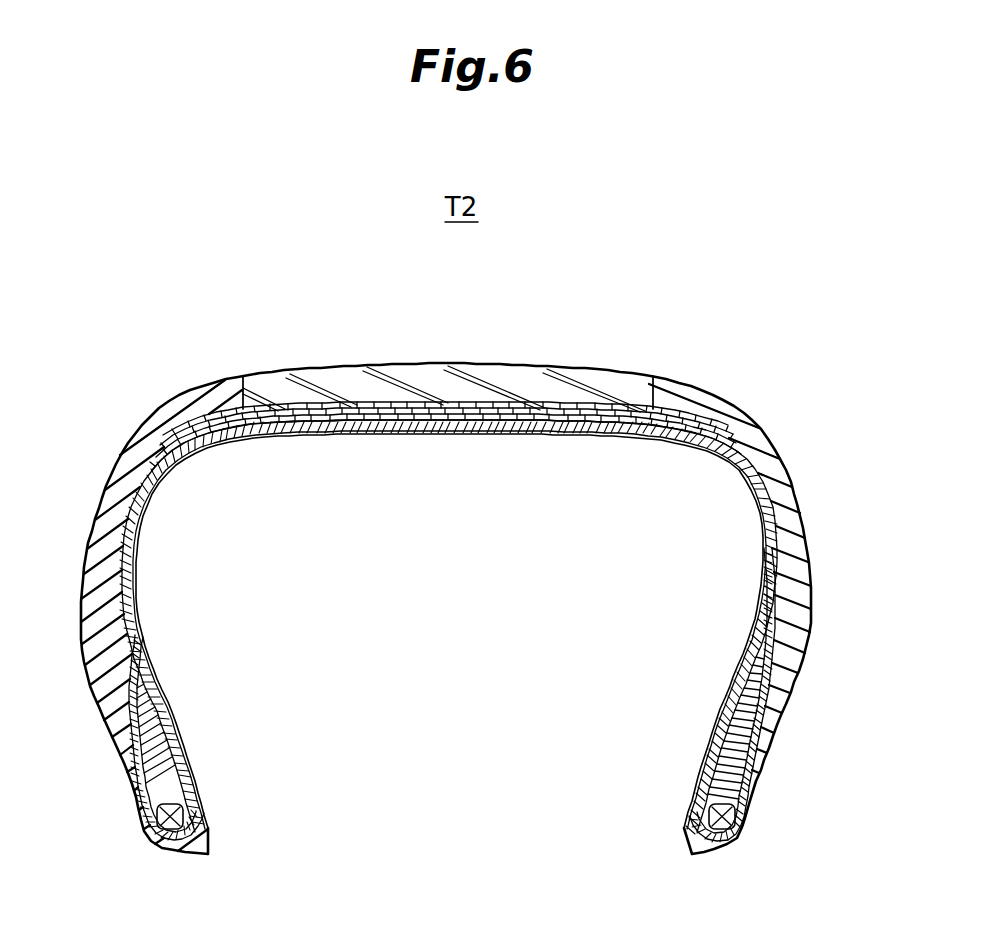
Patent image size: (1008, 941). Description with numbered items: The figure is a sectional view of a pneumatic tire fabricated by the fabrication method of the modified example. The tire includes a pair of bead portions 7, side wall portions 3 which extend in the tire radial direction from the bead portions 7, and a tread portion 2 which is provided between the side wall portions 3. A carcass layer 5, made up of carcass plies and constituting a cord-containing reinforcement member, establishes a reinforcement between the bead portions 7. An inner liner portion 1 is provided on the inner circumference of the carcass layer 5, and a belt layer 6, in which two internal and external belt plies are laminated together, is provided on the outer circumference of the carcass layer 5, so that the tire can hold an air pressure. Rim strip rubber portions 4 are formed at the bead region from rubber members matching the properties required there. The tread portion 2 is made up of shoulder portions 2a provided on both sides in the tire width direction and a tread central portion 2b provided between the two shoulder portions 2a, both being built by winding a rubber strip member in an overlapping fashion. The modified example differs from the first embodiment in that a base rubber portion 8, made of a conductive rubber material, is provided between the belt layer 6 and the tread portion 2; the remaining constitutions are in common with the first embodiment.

The inner liner portion 1 is at (467, 433).
The tread portion 2 is at (590, 362).
The shoulder portion 2a is at (205, 392).
The tread central portion 2b is at (428, 393).
The side wall portion 3 is at (110, 512).
The rim strip rubber portion 4 is at (117, 713).
The carcass layer 5 is at (733, 700).
The belt layer 6 is at (327, 403).
The bead portion 7 is at (192, 812).
The base rubber portion 8 is at (770, 458).